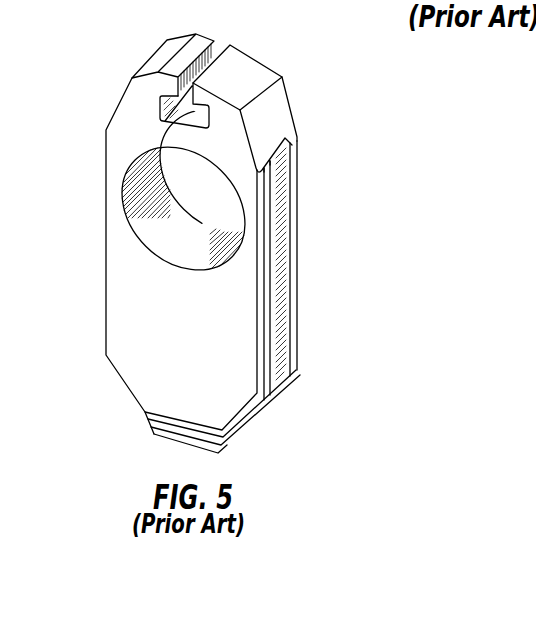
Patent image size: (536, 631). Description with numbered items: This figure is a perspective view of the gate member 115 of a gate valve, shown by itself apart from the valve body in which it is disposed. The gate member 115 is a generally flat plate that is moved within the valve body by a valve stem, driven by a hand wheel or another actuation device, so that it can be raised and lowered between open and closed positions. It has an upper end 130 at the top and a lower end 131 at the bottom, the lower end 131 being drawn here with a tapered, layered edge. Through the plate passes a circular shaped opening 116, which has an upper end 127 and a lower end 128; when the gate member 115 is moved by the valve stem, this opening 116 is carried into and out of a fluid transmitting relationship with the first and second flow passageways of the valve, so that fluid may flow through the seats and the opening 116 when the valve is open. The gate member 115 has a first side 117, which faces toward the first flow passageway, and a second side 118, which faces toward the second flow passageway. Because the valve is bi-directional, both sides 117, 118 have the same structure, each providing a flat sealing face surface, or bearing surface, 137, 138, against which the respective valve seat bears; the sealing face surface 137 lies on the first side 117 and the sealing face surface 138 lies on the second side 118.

The upper end 130 is at (205, 250).
The gate member 115 is at (250, 78).
The second side 118 is at (291, 107).
The sealing face surface 138 is at (296, 223).
The upper end of opening 127 is at (168, 150).
The circular shaped opening 116 is at (146, 207).
The lower end of opening 128 is at (149, 251).
The sealing face surface 137 is at (157, 352).
The first side 117 is at (217, 350).
The lower end 131 is at (166, 442).